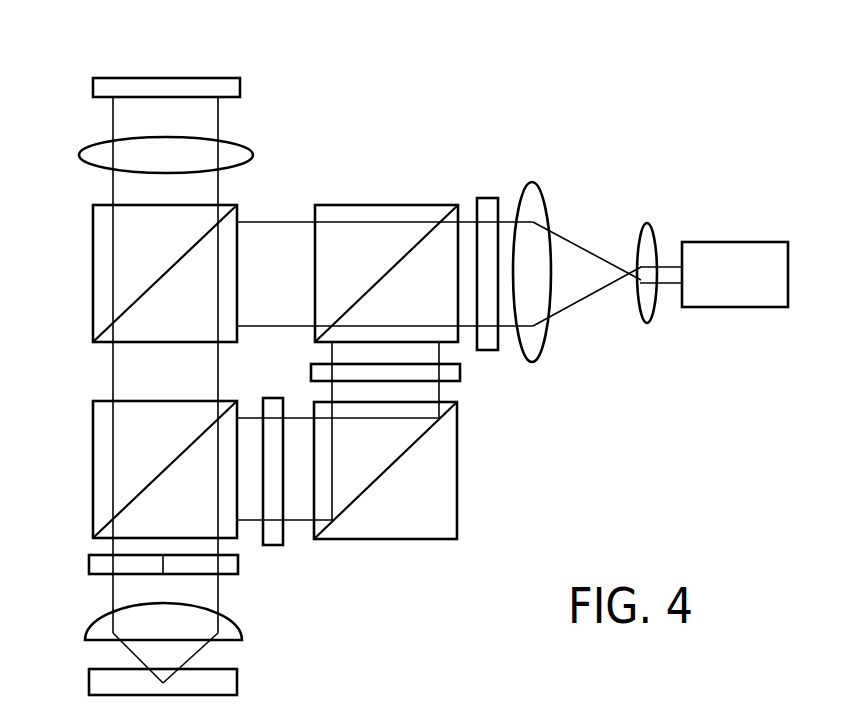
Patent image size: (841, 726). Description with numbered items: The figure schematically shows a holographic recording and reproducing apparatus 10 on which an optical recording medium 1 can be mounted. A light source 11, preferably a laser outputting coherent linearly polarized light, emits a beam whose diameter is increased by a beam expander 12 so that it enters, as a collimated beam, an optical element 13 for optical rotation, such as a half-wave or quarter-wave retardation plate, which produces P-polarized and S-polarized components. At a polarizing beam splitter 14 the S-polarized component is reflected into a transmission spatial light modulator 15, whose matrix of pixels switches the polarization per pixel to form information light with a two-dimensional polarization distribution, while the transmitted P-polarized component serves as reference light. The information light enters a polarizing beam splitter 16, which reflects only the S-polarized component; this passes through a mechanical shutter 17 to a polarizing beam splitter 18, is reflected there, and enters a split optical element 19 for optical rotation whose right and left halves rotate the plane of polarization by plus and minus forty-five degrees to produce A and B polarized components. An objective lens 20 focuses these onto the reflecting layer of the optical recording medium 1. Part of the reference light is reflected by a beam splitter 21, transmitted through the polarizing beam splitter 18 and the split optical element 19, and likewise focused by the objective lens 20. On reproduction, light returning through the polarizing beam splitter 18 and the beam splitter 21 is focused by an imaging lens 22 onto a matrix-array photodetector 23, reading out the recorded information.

The optical recording medium 1 is at (89, 683).
The holographic recording and reproducing apparatus 10 is at (645, 98).
The light source 11 is at (727, 310).
The beam expander 12 is at (657, 176).
The optical element for optical rotation 13 is at (489, 198).
The polarizing beam splitter 14 is at (377, 205).
The transmission spatial light modulator 15 is at (460, 372).
The polarizing beam splitter 16 is at (458, 487).
The mechanical shutter 17 is at (275, 546).
The polarizing beam splitter 18 is at (93, 452).
The split optical element for optical rotation 19 is at (89, 565).
The objective lens 20 is at (87, 628).
The beam splitter 21 is at (93, 257).
The imaging lens 22 is at (79, 153).
The matrix-array photodetector 23 is at (93, 88).